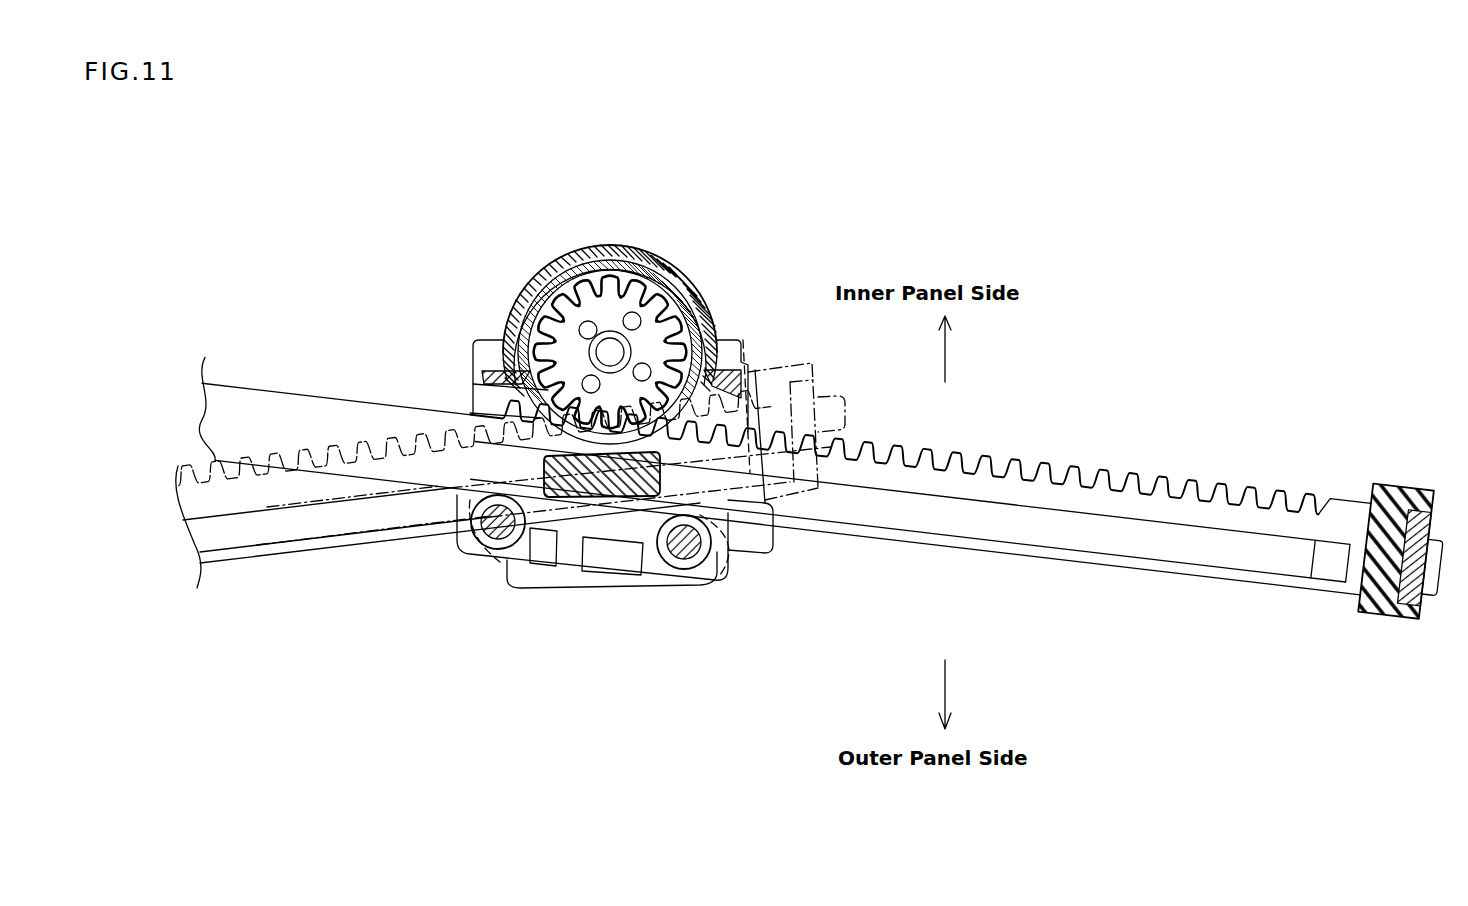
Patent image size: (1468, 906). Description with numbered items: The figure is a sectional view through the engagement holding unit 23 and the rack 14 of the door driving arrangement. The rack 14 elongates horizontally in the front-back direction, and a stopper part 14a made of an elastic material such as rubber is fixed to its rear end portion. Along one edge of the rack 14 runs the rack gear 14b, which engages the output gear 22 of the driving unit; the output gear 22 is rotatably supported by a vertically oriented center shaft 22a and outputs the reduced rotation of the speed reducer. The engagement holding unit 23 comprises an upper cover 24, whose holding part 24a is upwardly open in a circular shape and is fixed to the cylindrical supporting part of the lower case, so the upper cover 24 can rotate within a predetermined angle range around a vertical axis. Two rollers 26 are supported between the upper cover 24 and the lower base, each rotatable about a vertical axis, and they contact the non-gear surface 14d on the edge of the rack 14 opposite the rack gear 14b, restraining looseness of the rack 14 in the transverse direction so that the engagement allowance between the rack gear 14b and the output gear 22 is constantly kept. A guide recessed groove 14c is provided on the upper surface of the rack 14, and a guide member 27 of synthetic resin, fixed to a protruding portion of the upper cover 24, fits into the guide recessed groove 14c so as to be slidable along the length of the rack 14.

The rack 14 is at (402, 538).
The stopper part 14a is at (1384, 612).
The rack gear 14b is at (1212, 489).
The guide recessed groove 14c is at (1180, 540).
The non-gear surface 14d is at (931, 562).
The output gear 22 is at (690, 308).
The center shaft 22a is at (633, 350).
The engagement holding unit 23 is at (669, 603).
The upper cover 24 is at (613, 244).
The holding part 24a is at (510, 312).
The rollers 26 is at (466, 556).
The guide member 27 is at (598, 500).